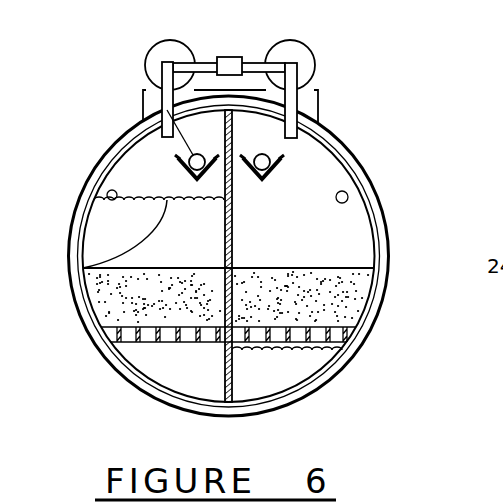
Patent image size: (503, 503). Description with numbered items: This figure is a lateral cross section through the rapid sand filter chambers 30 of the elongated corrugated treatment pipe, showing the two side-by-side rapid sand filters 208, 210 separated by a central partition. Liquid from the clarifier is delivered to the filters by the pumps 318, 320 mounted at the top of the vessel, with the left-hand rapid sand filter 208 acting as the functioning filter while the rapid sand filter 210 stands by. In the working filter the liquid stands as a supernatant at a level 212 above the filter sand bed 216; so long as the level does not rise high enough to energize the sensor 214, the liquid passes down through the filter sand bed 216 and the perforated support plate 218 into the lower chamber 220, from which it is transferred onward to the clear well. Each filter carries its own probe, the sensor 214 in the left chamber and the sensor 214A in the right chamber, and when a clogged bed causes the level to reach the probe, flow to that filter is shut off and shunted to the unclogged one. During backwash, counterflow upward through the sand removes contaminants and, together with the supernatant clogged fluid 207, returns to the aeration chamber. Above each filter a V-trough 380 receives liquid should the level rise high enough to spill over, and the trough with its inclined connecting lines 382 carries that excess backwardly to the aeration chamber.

The pump 320 is at (160, 53).
The pump 318 is at (303, 57).
The connecting lines 382 is at (167, 110).
The V-trough 380 is at (190, 163).
The rapid sand filter 208 is at (153, 154).
The rapid sand filter 210 is at (320, 172).
The sensor 214 is at (107, 193).
The sensor 214A is at (347, 193).
The supernatant clogged fluid 207 is at (123, 240).
The level 212 is at (86, 270).
The filter sand bed 216 is at (108, 295).
The perforated support plate 218 is at (113, 360).
The chamber 220 is at (176, 374).
The rapid sand filter chambers 30 is at (339, 246).